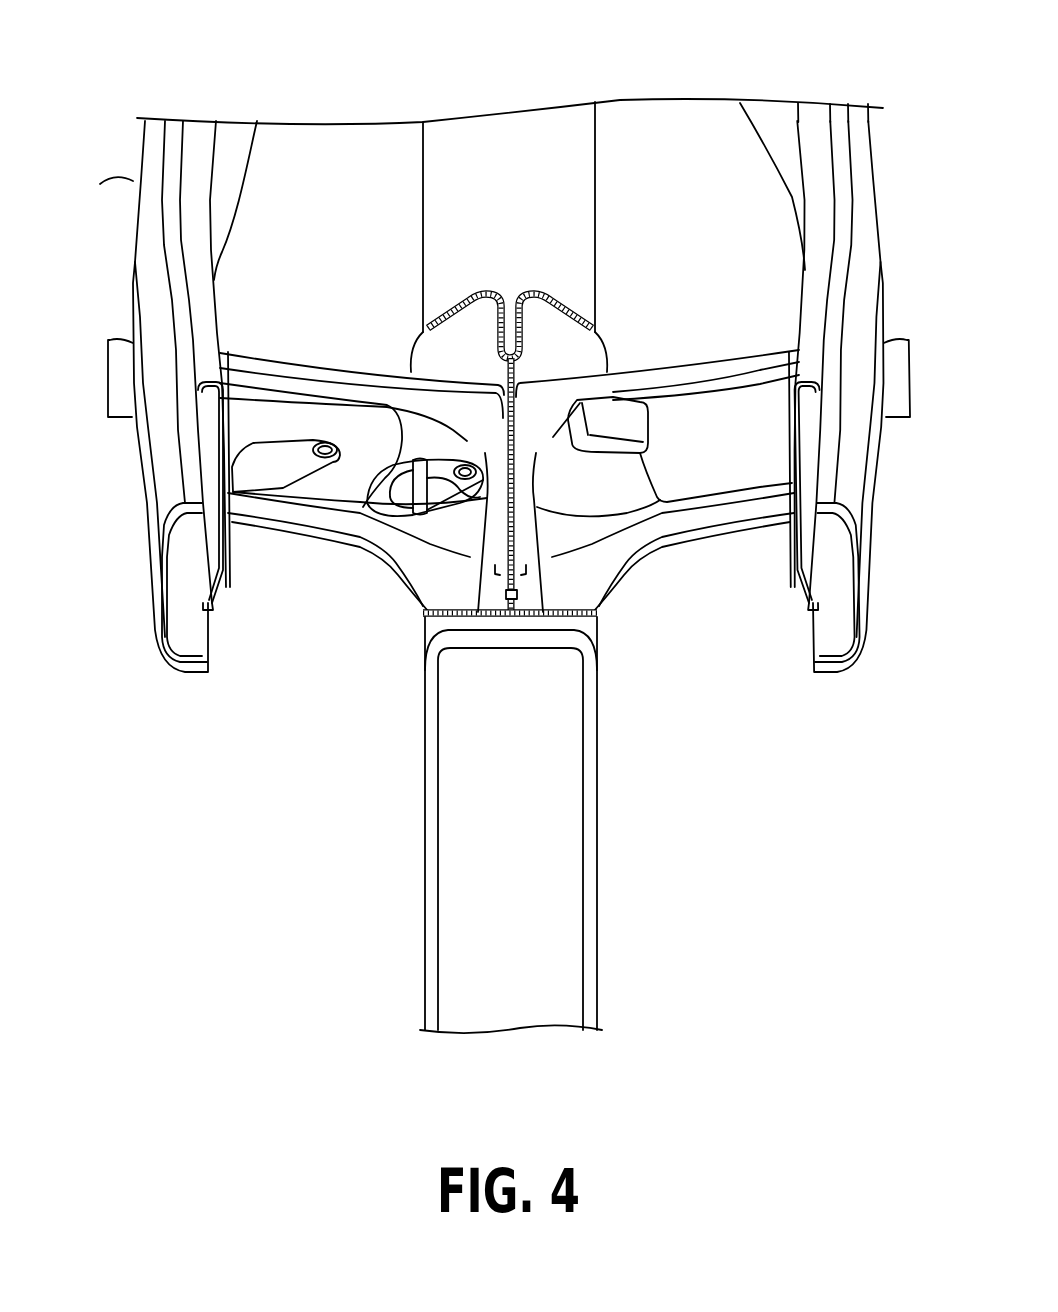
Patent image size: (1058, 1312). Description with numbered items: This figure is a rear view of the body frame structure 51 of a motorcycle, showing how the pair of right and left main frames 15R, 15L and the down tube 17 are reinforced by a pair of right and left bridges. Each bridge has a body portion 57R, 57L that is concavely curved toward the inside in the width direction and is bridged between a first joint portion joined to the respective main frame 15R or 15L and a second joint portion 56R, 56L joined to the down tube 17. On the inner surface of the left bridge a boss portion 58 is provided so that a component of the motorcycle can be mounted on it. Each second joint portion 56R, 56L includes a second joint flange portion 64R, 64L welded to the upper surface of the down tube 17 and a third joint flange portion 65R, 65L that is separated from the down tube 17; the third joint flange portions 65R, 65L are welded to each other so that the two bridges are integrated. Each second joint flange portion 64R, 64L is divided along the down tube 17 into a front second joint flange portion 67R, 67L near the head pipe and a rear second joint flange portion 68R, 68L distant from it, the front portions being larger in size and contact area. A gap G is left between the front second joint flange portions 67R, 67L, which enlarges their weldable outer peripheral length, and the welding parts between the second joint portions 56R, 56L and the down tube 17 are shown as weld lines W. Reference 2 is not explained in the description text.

The vehicle body 2 is at (612, 92).
The down tube 17 is at (597, 126).
The body frame structure 51 is at (391, 152).
The left main frame 15L is at (136, 181).
The right main frame 15R is at (864, 179).
The body portion 57L is at (283, 356).
The body portion 57R is at (737, 353).
The boss portion 58 is at (275, 468).
The second joint portion 56L is at (377, 566).
The second joint portion 56R is at (645, 566).
The weld lines W is at (481, 293).
The gap G is at (509, 320).
The second joint flange portion 64L is at (400, 256).
The second joint flange portion 64R is at (619, 256).
The front second joint flange portion 67L is at (468, 297).
The front second joint flange portion 67R is at (555, 298).
The rear second joint flange portion 68L is at (456, 615).
The rear second joint flange portion 68R is at (566, 615).
The third joint flange portion 65L is at (478, 612).
The third joint flange portion 65R is at (543, 612).